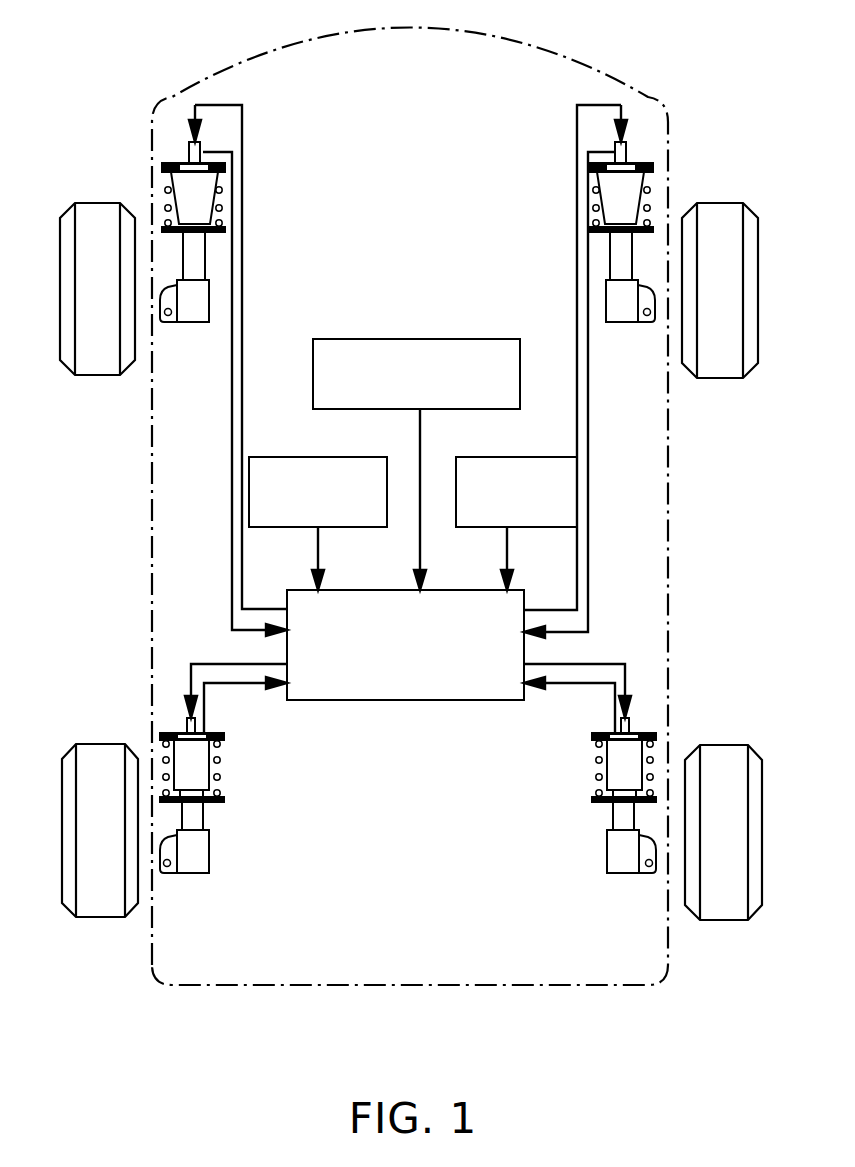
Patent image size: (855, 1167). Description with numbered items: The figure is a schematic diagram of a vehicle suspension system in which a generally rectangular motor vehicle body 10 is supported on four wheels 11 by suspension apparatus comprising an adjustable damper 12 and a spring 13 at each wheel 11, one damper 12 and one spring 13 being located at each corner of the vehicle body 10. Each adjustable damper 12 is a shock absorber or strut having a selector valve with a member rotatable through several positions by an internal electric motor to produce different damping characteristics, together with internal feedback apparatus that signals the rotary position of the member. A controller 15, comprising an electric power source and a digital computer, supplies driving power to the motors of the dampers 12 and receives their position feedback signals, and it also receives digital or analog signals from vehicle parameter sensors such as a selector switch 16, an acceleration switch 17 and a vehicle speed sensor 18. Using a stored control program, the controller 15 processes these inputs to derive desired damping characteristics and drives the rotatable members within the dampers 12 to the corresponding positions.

The motor vehicle body 10 is at (662, 84).
The wheel 11 is at (83, 312).
The adjustable damper 12 is at (197, 293).
The spring 13 is at (170, 190).
The controller 15 is at (428, 683).
The selector switch 16 is at (345, 462).
The acceleration switch 17 is at (437, 342).
The vehicle speed sensor 18 is at (502, 465).